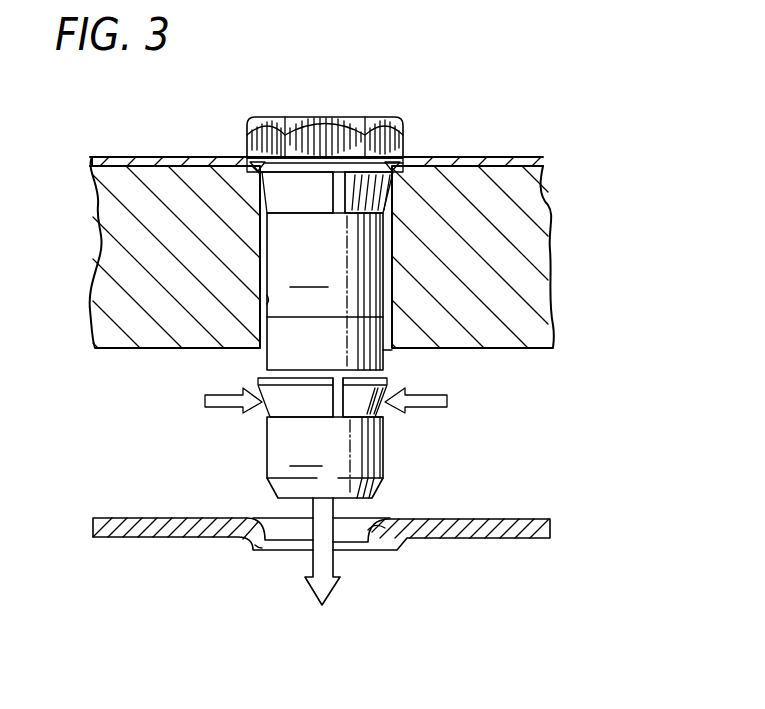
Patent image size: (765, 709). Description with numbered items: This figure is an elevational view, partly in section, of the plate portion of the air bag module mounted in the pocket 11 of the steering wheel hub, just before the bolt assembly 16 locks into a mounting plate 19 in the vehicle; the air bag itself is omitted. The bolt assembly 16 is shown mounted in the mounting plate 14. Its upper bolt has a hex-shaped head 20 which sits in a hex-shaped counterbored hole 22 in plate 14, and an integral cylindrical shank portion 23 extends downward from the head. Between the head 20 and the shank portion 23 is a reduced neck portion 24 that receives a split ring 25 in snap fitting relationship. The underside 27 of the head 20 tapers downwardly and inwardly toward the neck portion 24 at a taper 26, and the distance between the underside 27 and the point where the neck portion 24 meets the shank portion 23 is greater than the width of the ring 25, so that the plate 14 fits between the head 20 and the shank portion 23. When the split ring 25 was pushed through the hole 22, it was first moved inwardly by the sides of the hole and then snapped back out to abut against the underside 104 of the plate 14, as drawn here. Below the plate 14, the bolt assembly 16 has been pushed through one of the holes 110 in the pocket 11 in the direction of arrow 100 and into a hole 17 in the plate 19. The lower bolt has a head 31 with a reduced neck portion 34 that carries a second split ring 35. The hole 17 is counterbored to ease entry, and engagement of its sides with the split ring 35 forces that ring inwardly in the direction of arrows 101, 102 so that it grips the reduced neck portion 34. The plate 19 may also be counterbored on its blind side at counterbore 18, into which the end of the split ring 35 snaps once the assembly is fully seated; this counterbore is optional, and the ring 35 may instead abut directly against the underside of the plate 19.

The pocket 11 is at (135, 192).
The mounting plate 14 is at (492, 157).
The underside of plate 14 104 is at (507, 172).
The hex-shaped head 20 is at (298, 117).
The underside of head 20 27 is at (265, 170).
The reduced neck portion 24 is at (340, 180).
The hex-shaped counterbored hole 22 is at (407, 153).
The taper 26 is at (398, 178).
The split ring 25 is at (257, 195).
The cylindrical shank portion 23 is at (325, 291).
The holes 110 is at (268, 300).
The reduced neck portion 34 is at (275, 378).
The bolt assembly 16 is at (398, 358).
The arrow 101 is at (230, 412).
The arrow 102 is at (423, 412).
The head 31 is at (325, 457).
The split ring 35 is at (387, 410).
The mounting plate 19 is at (475, 518).
The hole 17 is at (372, 536).
The counterbore 18 is at (270, 555).
The arrow 100 is at (335, 585).